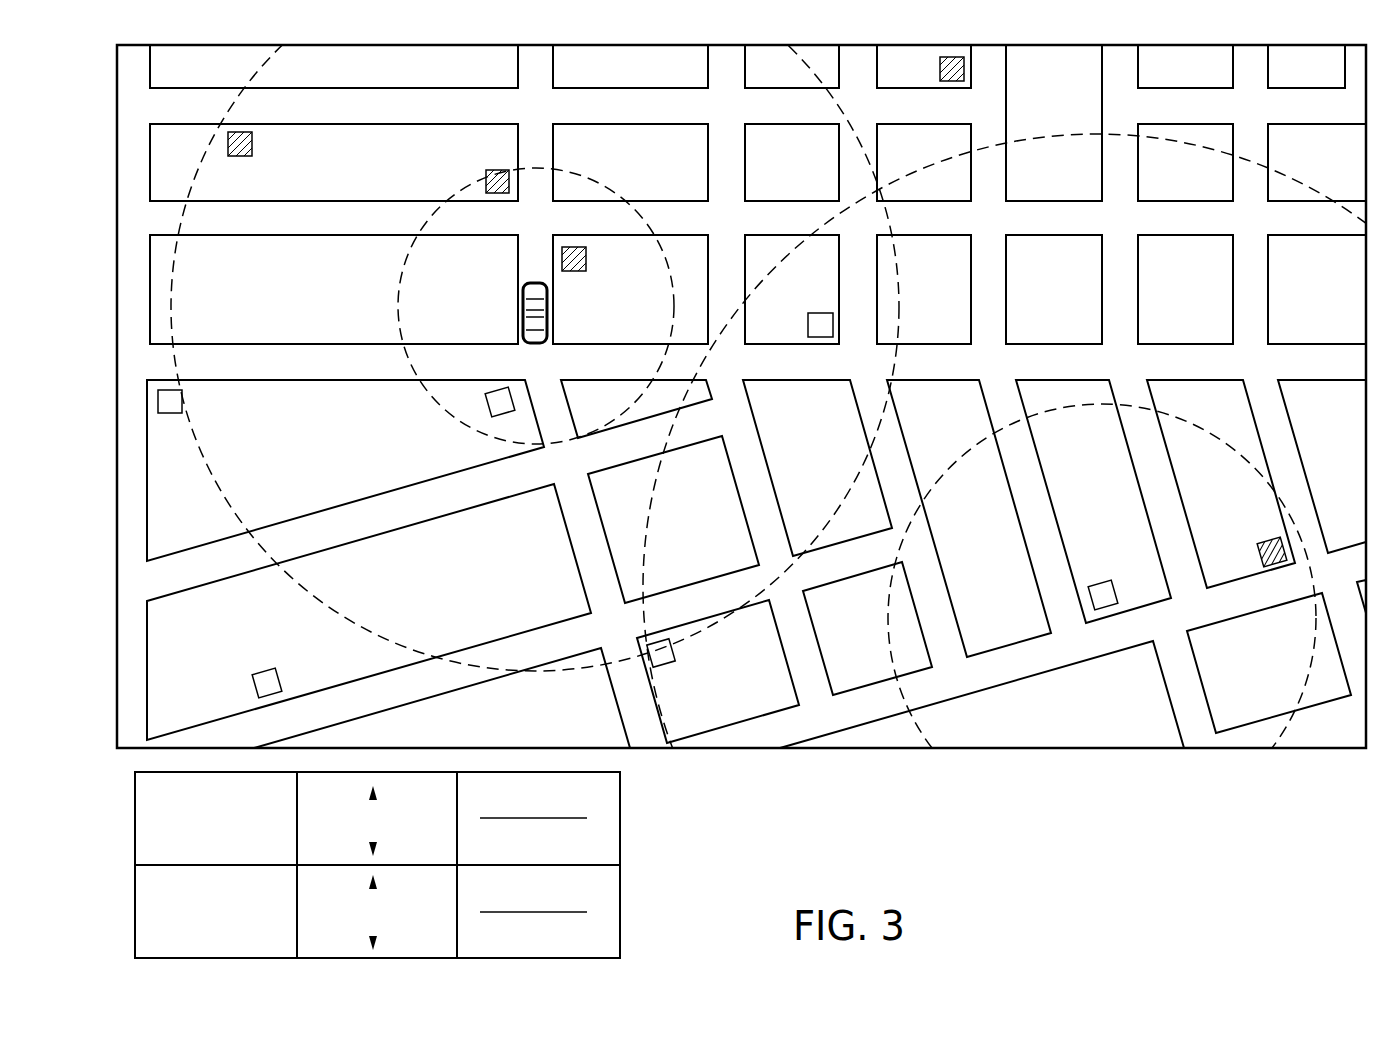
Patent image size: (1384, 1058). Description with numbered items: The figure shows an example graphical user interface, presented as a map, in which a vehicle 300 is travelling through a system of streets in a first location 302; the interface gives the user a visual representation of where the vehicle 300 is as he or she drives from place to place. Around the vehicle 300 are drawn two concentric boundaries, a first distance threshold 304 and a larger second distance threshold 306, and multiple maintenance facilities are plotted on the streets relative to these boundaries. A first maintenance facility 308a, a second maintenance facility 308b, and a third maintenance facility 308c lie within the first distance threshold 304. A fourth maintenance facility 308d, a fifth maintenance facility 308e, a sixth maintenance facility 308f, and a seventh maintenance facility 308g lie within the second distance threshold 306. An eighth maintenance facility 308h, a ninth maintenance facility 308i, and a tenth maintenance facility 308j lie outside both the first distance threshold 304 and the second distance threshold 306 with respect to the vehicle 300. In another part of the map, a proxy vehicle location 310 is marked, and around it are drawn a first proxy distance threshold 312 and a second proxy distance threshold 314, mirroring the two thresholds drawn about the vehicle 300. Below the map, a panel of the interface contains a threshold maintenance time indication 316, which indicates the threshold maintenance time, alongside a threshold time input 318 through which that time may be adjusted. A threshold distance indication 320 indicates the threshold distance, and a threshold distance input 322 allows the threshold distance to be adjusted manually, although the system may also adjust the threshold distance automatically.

The vehicle 300 is at (523, 307).
The first location 302 is at (699, 395).
The first distance threshold 304 is at (672, 317).
The second distance threshold 306 is at (263, 537).
The first maintenance facility 308a is at (562, 248).
The second maintenance facility 308b is at (492, 413).
The third maintenance facility 308c is at (486, 175).
The fourth maintenance facility 308d is at (252, 141).
The fifth maintenance facility 308e is at (818, 313).
The sixth maintenance facility 308f is at (182, 400).
The seventh maintenance facility 308g is at (663, 665).
The eighth maintenance facility 308h is at (964, 68).
The ninth maintenance facility 308i is at (1262, 540).
The tenth maintenance facility 308j is at (256, 685).
The proxy vehicle location 310 is at (1090, 585).
The first proxy distance threshold 312 is at (1087, 585).
The second proxy distance threshold 314 is at (1307, 182).
The threshold maintenance time indication 316 is at (135, 822).
The threshold time input 318 is at (623, 826).
The threshold distance indication 320 is at (135, 912).
The threshold distance input 322 is at (623, 912).